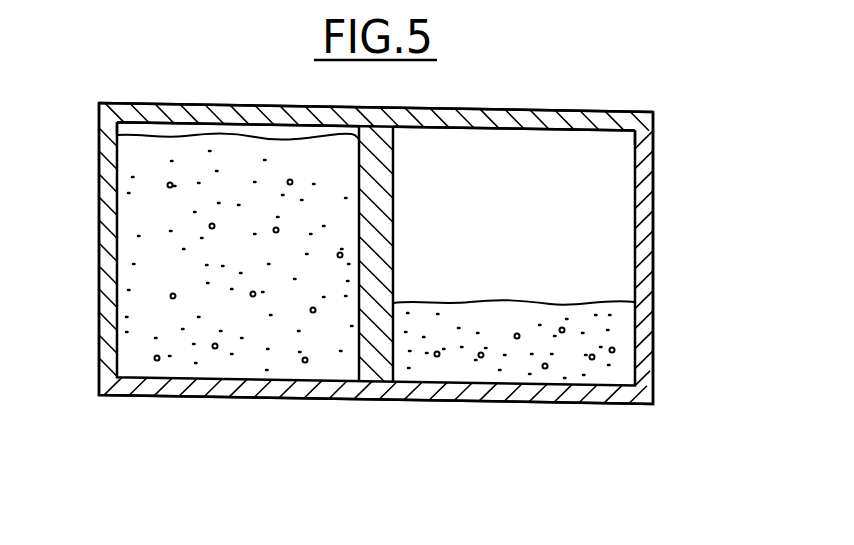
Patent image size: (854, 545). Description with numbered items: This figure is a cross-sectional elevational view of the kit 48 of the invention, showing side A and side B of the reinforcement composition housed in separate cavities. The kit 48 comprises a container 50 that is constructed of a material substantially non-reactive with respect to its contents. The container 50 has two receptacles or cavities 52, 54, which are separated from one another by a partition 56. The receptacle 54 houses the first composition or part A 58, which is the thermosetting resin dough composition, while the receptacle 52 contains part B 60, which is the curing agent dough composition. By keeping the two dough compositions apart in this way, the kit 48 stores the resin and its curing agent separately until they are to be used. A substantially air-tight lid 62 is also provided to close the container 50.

The kit 48 is at (662, 30).
The container 50 is at (654, 243).
The receptacle 52 is at (626, 163).
The receptacle 54 is at (125, 126).
The partition 56 is at (377, 372).
The part A 58 is at (128, 343).
The part B 60 is at (614, 380).
The lid 62 is at (189, 103).